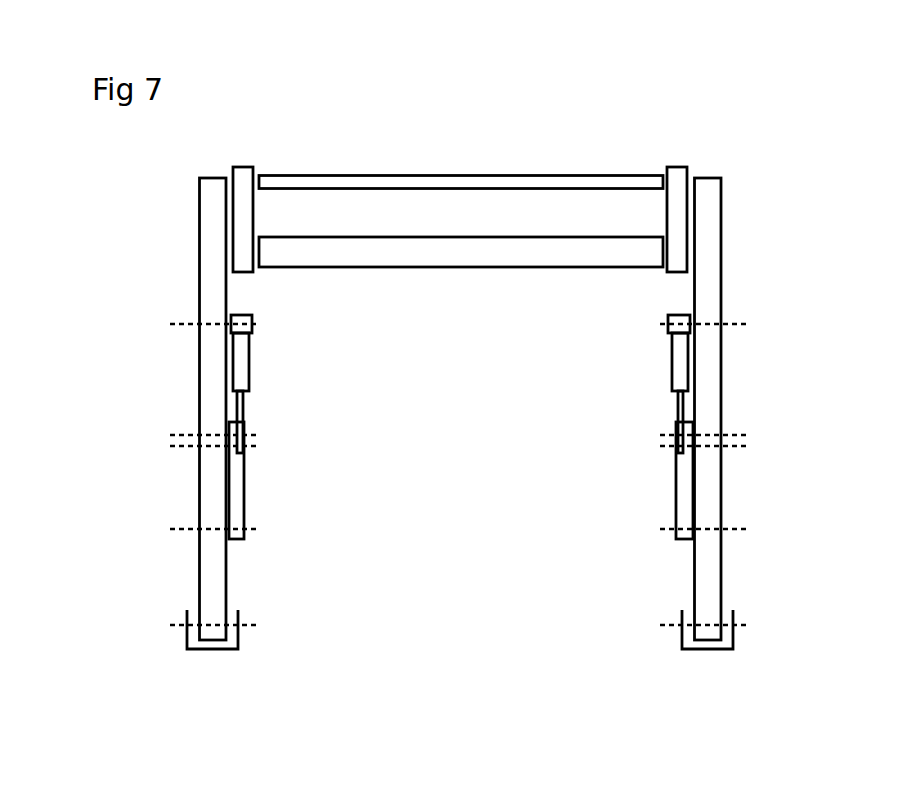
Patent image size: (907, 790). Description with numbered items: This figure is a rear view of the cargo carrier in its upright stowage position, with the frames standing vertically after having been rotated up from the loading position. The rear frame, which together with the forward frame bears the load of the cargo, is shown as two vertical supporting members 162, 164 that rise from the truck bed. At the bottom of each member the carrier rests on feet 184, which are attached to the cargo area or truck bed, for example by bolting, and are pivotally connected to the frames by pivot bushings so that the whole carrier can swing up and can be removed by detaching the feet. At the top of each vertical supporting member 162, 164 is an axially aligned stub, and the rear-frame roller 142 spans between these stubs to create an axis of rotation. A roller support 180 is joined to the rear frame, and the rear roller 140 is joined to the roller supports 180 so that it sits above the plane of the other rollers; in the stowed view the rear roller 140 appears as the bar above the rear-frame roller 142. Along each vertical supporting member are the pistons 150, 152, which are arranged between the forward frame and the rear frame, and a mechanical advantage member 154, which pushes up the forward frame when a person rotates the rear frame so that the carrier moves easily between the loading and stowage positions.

The rear roller 140 is at (298, 177).
The rear-frame roller 142 is at (268, 253).
The piston 150 is at (250, 372).
The piston 152 is at (672, 365).
The mechanical advantage member 154 is at (243, 485).
The vertical supporting member 162 is at (722, 280).
The vertical supporting member 164 is at (212, 392).
The roller support 180 is at (684, 171).
The feet 184 is at (683, 650).